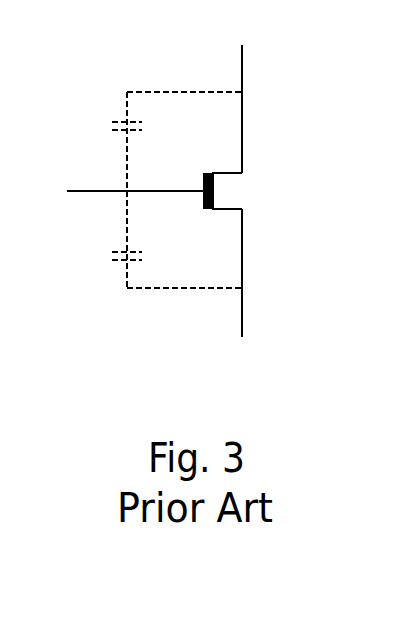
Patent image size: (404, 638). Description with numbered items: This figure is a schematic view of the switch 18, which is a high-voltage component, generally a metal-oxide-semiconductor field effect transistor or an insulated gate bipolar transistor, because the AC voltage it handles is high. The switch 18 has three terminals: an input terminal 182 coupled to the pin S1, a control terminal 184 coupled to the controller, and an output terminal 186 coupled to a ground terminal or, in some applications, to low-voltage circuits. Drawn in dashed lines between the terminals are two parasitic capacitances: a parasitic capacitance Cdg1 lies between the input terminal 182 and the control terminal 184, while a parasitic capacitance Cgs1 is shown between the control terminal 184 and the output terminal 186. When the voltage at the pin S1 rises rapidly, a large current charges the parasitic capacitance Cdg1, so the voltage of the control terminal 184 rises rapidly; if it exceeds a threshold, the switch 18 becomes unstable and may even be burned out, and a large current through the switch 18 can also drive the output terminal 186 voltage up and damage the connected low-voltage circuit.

The switch 18 is at (252, 188).
The input terminal 182 is at (243, 70).
The control terminal 184 is at (92, 189).
The output terminal 186 is at (243, 307).
The parasitic capacitance Cdg1 is at (177, 141).
The gate-source parasitic capacitance Cgs1 is at (177, 239).